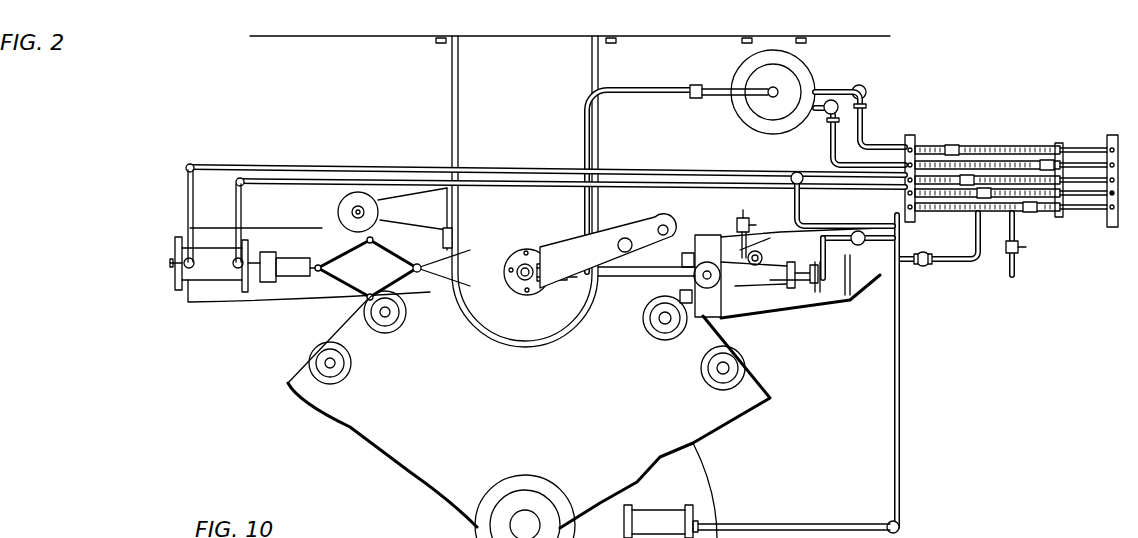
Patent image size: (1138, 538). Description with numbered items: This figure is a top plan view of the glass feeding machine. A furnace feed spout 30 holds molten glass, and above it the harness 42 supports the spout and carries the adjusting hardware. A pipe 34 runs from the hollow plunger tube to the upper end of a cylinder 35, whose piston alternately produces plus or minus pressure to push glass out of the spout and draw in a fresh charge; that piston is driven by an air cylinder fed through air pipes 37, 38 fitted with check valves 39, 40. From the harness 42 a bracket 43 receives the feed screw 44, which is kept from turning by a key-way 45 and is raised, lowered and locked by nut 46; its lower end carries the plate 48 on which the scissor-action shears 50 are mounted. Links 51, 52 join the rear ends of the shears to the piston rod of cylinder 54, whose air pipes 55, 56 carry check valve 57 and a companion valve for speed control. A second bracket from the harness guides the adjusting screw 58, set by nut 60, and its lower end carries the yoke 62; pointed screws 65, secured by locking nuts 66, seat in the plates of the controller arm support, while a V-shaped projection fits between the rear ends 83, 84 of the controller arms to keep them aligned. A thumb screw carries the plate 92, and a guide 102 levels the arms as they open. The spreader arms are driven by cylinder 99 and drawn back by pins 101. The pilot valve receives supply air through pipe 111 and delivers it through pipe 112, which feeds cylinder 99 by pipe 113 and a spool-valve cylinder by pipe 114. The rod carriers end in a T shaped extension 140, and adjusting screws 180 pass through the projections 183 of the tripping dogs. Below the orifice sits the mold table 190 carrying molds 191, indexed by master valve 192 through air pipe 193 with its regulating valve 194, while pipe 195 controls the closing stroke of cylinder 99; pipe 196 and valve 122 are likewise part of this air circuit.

The feed spout 30 is at (512, 122).
The pipe 34 is at (650, 91).
The cylinder 35 is at (792, 80).
The air pipe 37 is at (868, 128).
The air pipe 38 is at (828, 130).
The check valve 39 is at (867, 104).
The check valve 40 is at (823, 125).
The harness 42 is at (452, 90).
The bracket 43 is at (415, 219).
The feed screw 44 is at (358, 208).
The key-way 45 is at (345, 232).
The nut 46 is at (338, 212).
The plate 48 is at (221, 303).
The shears 50 is at (452, 290).
The link 51 is at (368, 268).
The link 52 is at (345, 288).
The cylinder 54 is at (212, 225).
The air pipe 55 is at (293, 167).
The air pipe 56 is at (296, 186).
The check valve 57 is at (172, 264).
The adjusting screw 58 is at (270, 252).
The nut 60 is at (692, 328).
The yoke 62 is at (717, 307).
The pointed screw 65 is at (703, 323).
The locking nut 66 is at (700, 323).
The rear end of controller arm 83 is at (735, 245).
The rear end of controller arm 84 is at (747, 290).
The plate 92 is at (650, 296).
The cylinder 99 is at (817, 300).
The pin 101 is at (780, 290).
The guide 102 is at (752, 236).
The pipe 111 is at (740, 240).
The pipe 112 is at (912, 266).
The pipe 113 is at (848, 300).
The pipe 114 is at (975, 233).
The pipe 122 is at (1015, 275).
The T shaped extension 140 is at (1112, 228).
The adjusting screw 180 is at (1013, 146).
The projection 183 is at (953, 145).
The mold table 190 is at (453, 414).
The mold 191 is at (386, 320).
The master valve 192 is at (660, 520).
The air pipe 193 is at (903, 472).
The regulating valve 194 is at (906, 510).
The pipe 195 is at (878, 250).
The pipe 196 is at (805, 230).